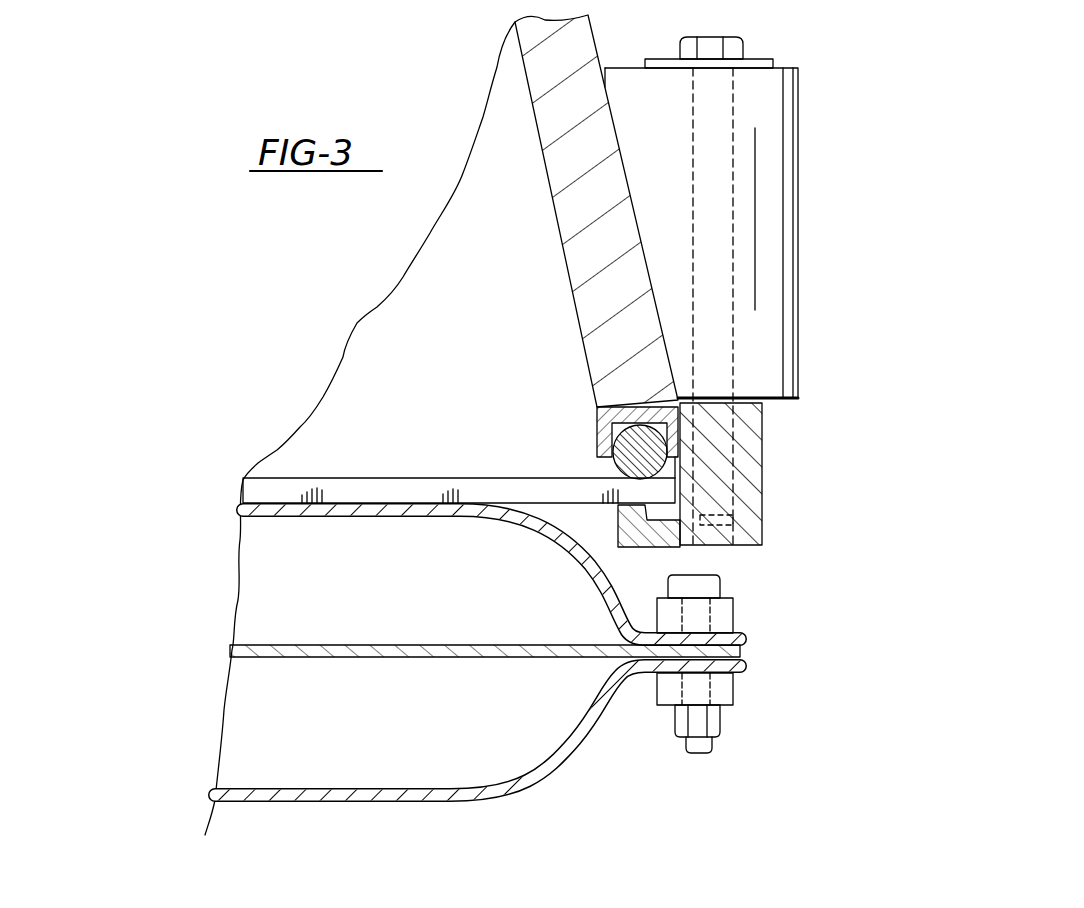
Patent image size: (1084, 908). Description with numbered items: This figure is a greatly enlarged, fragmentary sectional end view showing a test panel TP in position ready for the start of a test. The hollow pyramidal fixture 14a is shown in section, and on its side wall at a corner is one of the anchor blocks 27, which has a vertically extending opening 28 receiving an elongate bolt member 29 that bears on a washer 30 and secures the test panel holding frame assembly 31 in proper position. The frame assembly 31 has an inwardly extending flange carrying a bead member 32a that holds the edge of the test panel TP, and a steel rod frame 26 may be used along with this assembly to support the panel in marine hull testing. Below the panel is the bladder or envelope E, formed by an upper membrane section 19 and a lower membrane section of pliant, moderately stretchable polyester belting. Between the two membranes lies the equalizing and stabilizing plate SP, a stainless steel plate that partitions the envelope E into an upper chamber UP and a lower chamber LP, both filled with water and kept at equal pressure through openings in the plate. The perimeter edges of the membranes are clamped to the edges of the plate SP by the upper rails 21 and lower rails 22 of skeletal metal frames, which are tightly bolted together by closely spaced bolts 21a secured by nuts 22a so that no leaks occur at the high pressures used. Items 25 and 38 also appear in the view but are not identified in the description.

The hollow pyramidal fixture 14a is at (568, 245).
The upper membrane section 19 is at (423, 518).
The upper frame end and side rails 21 is at (743, 622).
The bolts 21a is at (723, 583).
The lower frame end and side rails 22 is at (735, 683).
The nuts 22a is at (722, 722).
The seal retainer 25 is at (610, 408).
The steel rod frame 26 is at (637, 420).
The anchor blocks 27 is at (800, 242).
The vertically extending openings 28 is at (733, 145).
The elongate bolt members 29 is at (748, 50).
The washers 30 is at (775, 63).
The test panel holding frame assembly 31 is at (763, 440).
The bead members 32a is at (645, 549).
The pin 38 is at (760, 497).
The test panel TP is at (462, 478).
The bladder or envelope E is at (584, 582).
The equalizing and stabilizing plate SP is at (560, 659).
The upper chamber UP is at (282, 587).
The lower chamber LP is at (250, 725).